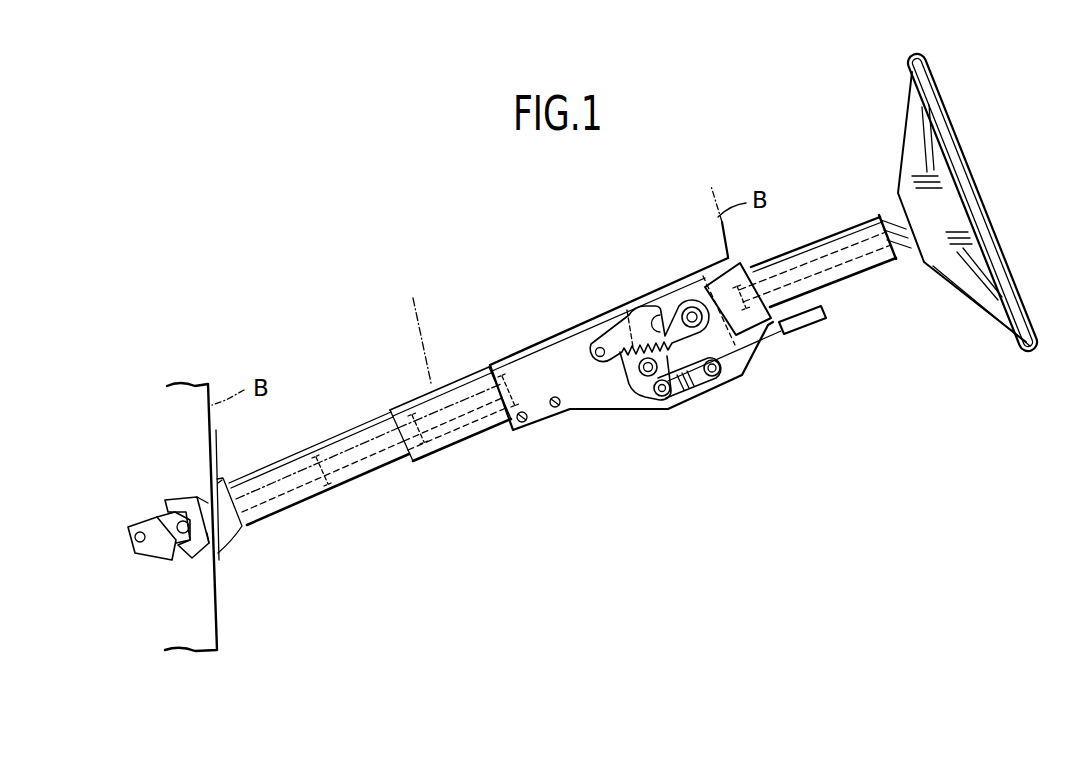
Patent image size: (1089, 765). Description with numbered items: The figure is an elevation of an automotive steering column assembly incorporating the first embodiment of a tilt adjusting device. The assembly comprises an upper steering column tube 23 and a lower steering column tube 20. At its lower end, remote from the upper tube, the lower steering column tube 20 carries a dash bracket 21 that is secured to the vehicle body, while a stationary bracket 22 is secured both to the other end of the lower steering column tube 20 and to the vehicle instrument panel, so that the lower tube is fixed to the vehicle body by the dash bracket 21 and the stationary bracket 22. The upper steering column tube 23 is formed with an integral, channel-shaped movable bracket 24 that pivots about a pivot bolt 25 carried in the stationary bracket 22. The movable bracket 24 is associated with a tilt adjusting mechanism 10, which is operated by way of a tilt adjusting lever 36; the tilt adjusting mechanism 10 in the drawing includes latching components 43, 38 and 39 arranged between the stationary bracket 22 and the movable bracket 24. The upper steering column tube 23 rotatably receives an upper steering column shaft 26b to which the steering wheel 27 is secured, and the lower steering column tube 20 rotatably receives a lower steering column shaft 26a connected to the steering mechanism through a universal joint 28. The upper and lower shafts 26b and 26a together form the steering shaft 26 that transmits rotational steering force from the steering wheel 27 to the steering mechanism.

The tilt adjusting mechanism 10 is at (671, 422).
The lower steering column tube 20 is at (450, 445).
The dash bracket 21 is at (224, 585).
The stationary bracket 22 is at (583, 411).
The upper steering column tube 23 is at (861, 275).
The movable bracket 24 is at (747, 352).
The pivot bolt 25 is at (691, 307).
The steering shaft 26 is at (433, 407).
The lower steering column shaft 26a is at (373, 472).
The upper steering column shaft 26b is at (818, 248).
The steering wheel 27 is at (990, 214).
The universal joint 28 is at (138, 558).
The tilt adjusting lever 36 is at (812, 329).
The pawl 38 is at (648, 393).
The link 39 is at (705, 391).
The latch plate 43 is at (608, 338).